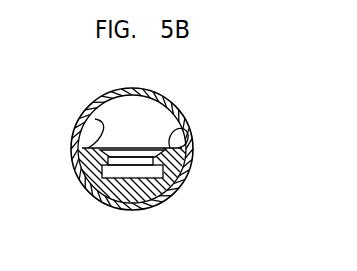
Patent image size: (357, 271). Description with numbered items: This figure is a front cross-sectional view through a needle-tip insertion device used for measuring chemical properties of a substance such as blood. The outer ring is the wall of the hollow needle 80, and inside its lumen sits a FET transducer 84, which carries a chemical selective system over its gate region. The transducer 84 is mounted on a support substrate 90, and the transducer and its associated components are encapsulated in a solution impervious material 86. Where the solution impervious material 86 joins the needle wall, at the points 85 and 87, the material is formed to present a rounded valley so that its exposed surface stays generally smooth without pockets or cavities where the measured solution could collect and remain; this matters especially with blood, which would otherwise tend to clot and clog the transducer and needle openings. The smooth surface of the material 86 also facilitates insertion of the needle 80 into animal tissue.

The hollow needle 80 is at (176, 104).
The FET transducer 84 is at (122, 167).
The rounded valley junction 85 is at (96, 122).
The solution impervious material 86 is at (160, 159).
The rounded valley junction 87 is at (189, 129).
The support substrate 90 is at (148, 172).